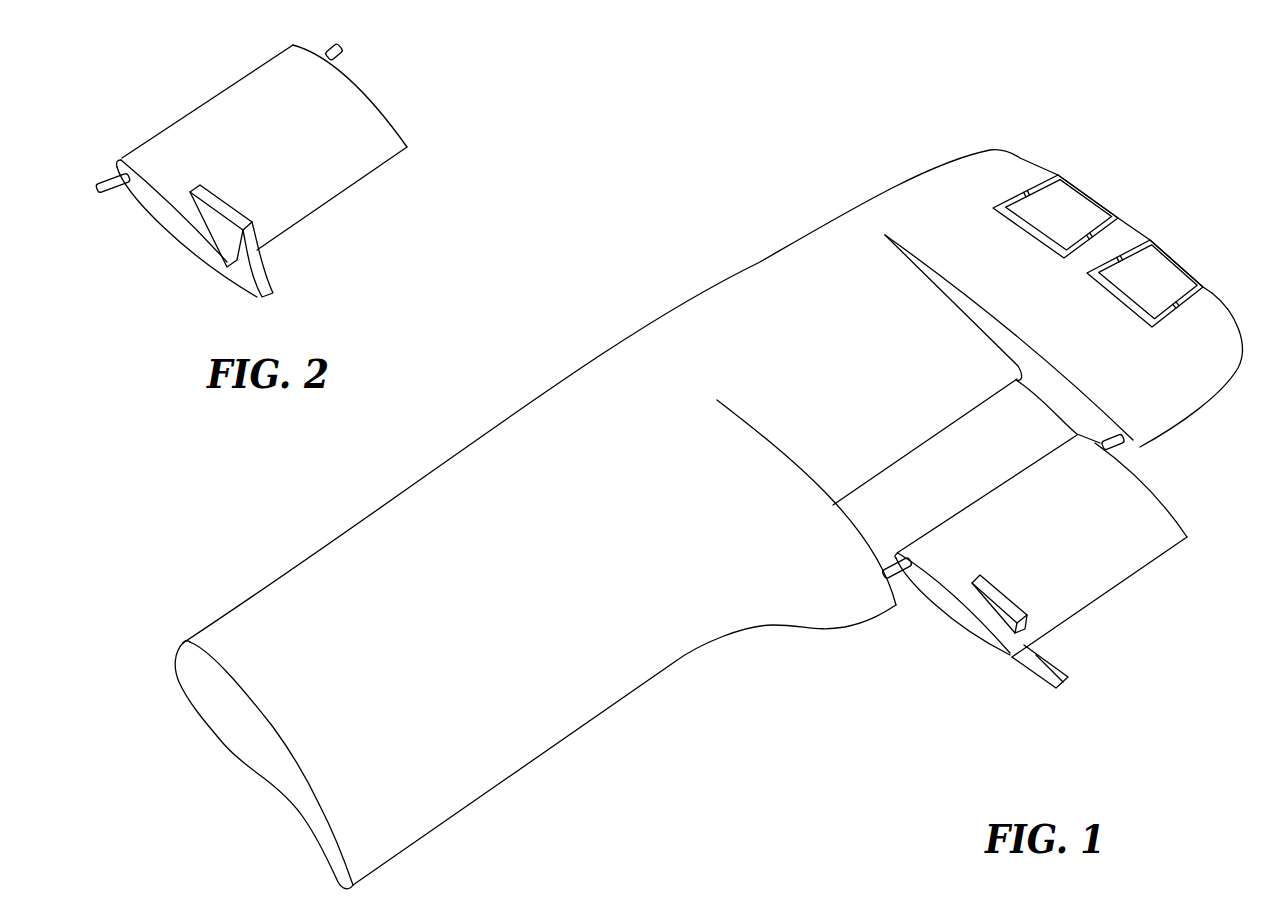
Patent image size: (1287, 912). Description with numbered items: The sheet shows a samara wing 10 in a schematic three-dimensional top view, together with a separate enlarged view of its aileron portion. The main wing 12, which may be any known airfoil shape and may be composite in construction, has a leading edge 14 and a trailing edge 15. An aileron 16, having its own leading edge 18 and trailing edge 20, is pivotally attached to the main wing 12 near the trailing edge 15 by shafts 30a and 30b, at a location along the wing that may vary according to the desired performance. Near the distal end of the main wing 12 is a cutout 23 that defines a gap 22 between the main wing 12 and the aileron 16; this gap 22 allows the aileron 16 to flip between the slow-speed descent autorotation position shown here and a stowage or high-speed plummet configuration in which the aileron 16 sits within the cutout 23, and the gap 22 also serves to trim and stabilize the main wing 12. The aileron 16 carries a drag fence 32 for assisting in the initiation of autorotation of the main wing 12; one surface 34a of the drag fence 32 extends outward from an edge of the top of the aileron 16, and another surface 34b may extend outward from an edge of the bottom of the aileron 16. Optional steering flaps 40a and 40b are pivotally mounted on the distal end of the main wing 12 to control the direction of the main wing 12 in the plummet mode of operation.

In FIG. 1, the samara wing 10 is at (831, 190).
In FIG. 1, the main wing 12 is at (360, 668).
In FIG. 1, the leading edge 14 is at (688, 300).
In FIG. 1, the trailing edge 15 is at (537, 757).
In FIG. 1, the aileron 16 is at (1127, 538).
In FIG. 2, the aileron 16 is at (288, 146).
In FIG. 1, the leading edge 18 is at (1003, 478).
In FIG. 2, the leading edge 18 is at (240, 82).
In FIG. 1, the trailing edge 20 is at (1133, 573).
In FIG. 2, the trailing edge 20 is at (355, 183).
In FIG. 1, the gap 22 is at (910, 486).
In FIG. 1, the cutout 23 is at (1058, 388).
In FIG. 1, the shaft 30a is at (1120, 450).
In FIG. 2, the shaft 30a is at (345, 53).
In FIG. 1, the shaft 30b is at (897, 577).
In FIG. 2, the shaft 30b is at (112, 190).
In FIG. 1, the drag fence 32 is at (987, 577).
In FIG. 2, the drag fence 32 is at (272, 293).
In FIG. 1, the surface 34a is at (1022, 601).
In FIG. 2, the surface 34a is at (243, 212).
In FIG. 1, the surface 34b is at (1038, 674).
In FIG. 2, the surface 34b is at (233, 287).
In FIG. 1, the steering flap 40a is at (1070, 208).
In FIG. 1, the steering flap 40b is at (1158, 273).